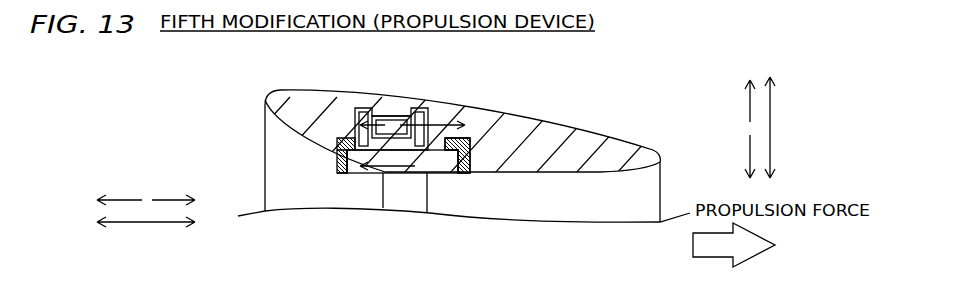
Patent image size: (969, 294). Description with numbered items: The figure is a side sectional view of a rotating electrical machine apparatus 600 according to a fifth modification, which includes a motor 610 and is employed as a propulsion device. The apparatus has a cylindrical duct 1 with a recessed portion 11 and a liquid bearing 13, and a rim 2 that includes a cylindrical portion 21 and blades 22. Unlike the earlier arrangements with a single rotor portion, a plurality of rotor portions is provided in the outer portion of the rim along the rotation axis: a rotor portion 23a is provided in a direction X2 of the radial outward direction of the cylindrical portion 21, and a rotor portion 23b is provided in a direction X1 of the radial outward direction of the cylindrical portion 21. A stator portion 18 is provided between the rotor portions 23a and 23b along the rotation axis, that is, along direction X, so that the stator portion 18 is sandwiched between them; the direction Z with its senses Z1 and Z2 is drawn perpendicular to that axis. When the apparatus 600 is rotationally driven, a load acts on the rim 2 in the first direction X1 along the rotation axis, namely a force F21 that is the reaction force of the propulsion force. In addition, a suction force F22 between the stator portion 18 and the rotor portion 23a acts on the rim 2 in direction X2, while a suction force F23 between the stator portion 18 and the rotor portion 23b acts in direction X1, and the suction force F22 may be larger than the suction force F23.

The duct 1 is at (470, 139).
The rim 2 is at (440, 176).
The recessed portion 11 is at (421, 107).
The liquid bearing 13 is at (336, 150).
The stator portion 18 is at (391, 114).
The cylindrical portion 21 is at (348, 170).
The blades 22 is at (421, 199).
The rotor portion 23a is at (414, 107).
The rotor portion 23b is at (352, 117).
The rotating electrical machine apparatus 600 is at (545, 89).
The motor 610 is at (474, 186).
The force F21 is at (378, 176).
The suction force F22 is at (440, 118).
The suction force F23 is at (362, 108).
The direction X is at (146, 232).
The direction X1 is at (119, 193).
The direction X2 is at (173, 193).
The direction Z is at (777, 127).
The direction Z1 is at (738, 101).
The direction Z2 is at (738, 156).